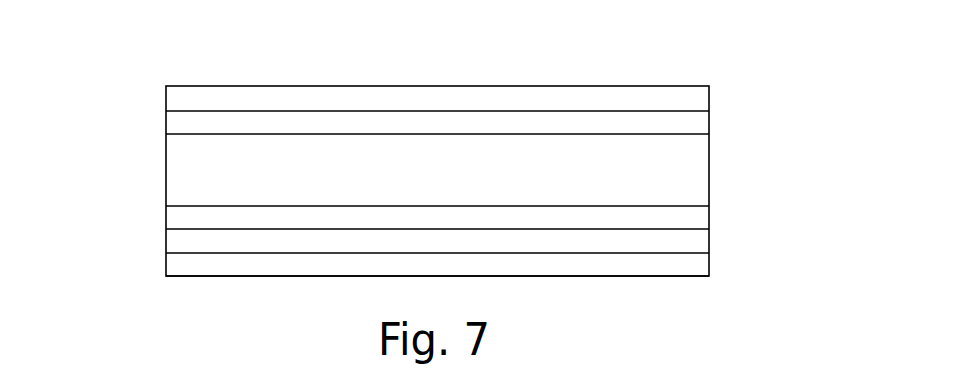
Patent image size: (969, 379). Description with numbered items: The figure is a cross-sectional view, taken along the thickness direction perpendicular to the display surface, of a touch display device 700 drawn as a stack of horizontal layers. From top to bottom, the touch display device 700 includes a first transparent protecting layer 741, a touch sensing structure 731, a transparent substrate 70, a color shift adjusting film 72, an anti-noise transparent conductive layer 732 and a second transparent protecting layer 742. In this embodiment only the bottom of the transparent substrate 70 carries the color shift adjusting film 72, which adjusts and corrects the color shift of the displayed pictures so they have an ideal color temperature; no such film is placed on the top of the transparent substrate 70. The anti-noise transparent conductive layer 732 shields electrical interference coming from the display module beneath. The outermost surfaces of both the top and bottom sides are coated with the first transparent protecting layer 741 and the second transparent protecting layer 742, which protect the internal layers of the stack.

The touch display device 700 is at (625, 66).
The transparent substrate 70 is at (688, 168).
The color shift adjusting film 72 is at (183, 217).
The touch sensing structure 731 is at (177, 122).
The anti-noise transparent conductive layer 732 is at (692, 241).
The first transparent protecting layer 741 is at (692, 98).
The second transparent protecting layer 742 is at (183, 265).